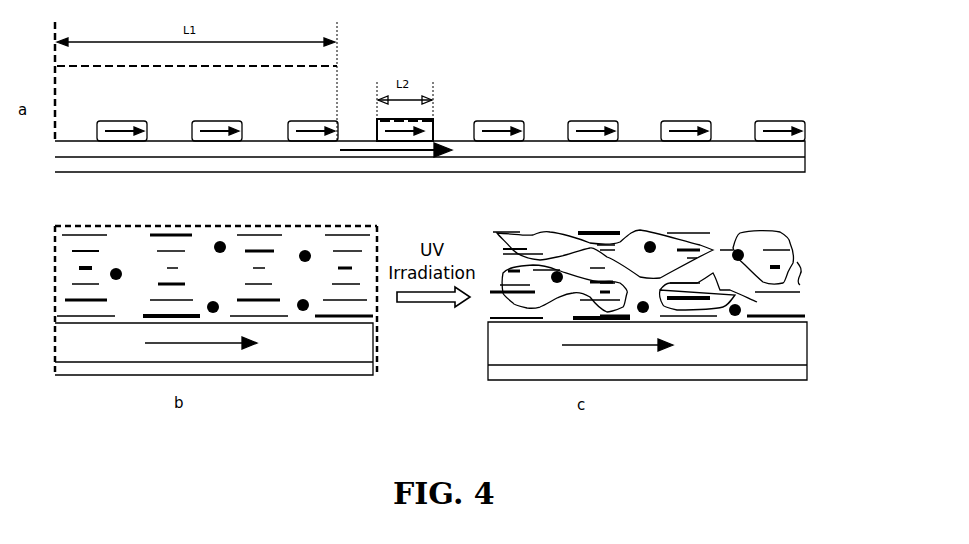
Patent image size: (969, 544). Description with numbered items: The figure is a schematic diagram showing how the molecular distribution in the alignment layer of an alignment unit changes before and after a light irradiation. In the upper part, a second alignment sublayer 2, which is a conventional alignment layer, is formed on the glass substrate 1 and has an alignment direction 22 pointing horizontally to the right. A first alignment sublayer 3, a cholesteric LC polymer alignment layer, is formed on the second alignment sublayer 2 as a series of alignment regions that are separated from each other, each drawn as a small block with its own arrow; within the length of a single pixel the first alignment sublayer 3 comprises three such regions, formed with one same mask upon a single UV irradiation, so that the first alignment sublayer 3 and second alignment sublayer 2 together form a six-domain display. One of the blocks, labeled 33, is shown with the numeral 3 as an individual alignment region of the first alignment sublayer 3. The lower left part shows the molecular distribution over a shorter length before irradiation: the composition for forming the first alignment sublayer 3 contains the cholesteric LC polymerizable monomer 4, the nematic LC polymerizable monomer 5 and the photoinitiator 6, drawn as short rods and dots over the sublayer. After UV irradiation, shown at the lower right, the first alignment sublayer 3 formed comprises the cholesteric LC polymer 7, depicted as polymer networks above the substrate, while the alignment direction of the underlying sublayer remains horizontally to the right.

The glass substrate 1 is at (798, 373).
The second alignment sublayer 2 is at (798, 152).
The first alignment sublayer 3 is at (778, 128).
The electrode strip 33 is at (685, 128).
The alignment direction 22 is at (418, 150).
The cholesteric LC polymerizable monomer 4 is at (688, 232).
The nematic LC polymerizable monomer 5 is at (802, 317).
The photoinitiator 6 is at (222, 245).
The cholesteric LC polymer 7 is at (798, 267).